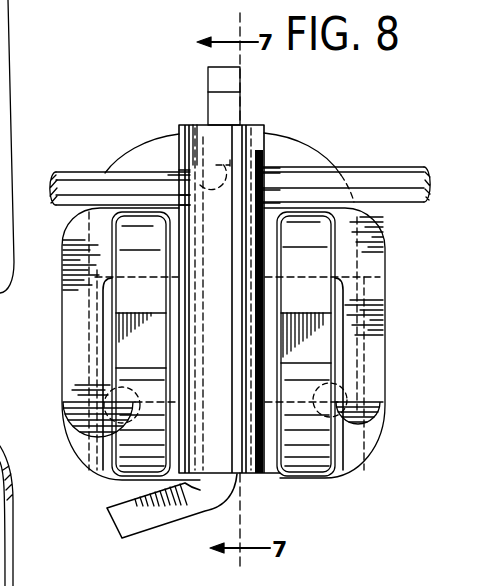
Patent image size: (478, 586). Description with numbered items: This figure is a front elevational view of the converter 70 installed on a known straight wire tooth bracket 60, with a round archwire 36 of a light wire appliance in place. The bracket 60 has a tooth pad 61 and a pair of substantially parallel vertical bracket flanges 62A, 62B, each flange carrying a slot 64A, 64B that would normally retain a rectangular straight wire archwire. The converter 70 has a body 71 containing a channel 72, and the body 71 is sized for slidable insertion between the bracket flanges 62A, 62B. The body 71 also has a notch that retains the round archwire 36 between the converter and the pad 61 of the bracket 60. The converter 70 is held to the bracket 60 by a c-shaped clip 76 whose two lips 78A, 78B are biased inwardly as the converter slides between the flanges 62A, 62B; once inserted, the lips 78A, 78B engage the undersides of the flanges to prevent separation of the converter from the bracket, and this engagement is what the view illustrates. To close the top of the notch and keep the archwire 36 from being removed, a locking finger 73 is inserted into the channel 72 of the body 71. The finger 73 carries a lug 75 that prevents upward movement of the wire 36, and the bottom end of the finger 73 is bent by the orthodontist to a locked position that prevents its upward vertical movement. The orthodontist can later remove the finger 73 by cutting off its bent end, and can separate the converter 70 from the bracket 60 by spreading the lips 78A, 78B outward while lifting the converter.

The round archwire 36 is at (377, 180).
The straight wire tooth bracket 60 is at (320, 148).
The tooth pad 61 is at (147, 147).
The bracket flange 62A is at (130, 222).
The bracket flange 62B is at (317, 238).
The slot 64A is at (134, 366).
The slot 64B is at (307, 362).
The converter 70 is at (268, 120).
The body 71 is at (240, 452).
The channel 72 is at (198, 136).
The locking finger 73 is at (220, 80).
The lug 75 is at (170, 177).
The c-shaped clip 76 is at (68, 320).
The lip 78A is at (63, 402).
The lip 78B is at (380, 417).